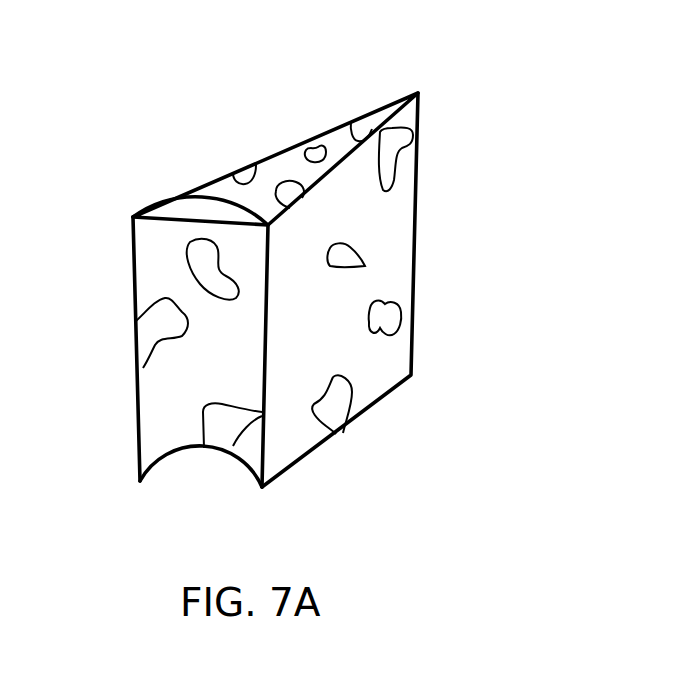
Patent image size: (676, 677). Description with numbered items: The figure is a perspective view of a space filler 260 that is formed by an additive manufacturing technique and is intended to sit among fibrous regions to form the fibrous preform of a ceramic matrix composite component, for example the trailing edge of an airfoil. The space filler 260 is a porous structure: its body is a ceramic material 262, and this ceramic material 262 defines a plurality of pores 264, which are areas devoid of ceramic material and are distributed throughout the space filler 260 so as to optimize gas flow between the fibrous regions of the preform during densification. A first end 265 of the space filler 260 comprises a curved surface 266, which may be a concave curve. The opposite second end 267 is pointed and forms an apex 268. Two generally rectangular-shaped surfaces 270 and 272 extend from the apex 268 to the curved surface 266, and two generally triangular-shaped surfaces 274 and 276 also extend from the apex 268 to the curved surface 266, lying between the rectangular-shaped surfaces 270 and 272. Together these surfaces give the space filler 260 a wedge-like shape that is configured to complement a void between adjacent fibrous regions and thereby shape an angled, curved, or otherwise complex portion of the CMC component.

The space filler 260 is at (178, 112).
The ceramic material 262 is at (292, 344).
The pores 264 is at (335, 408).
The first end 265 is at (137, 213).
The curved surface 266 is at (160, 407).
The second end 267 is at (421, 115).
The apex 268 is at (416, 190).
The rectangular-shaped surface 270 is at (391, 245).
The rectangular-shaped surface 272 is at (332, 130).
The triangular-shaped surface 274 is at (268, 168).
The triangular-shaped surface 276 is at (200, 447).